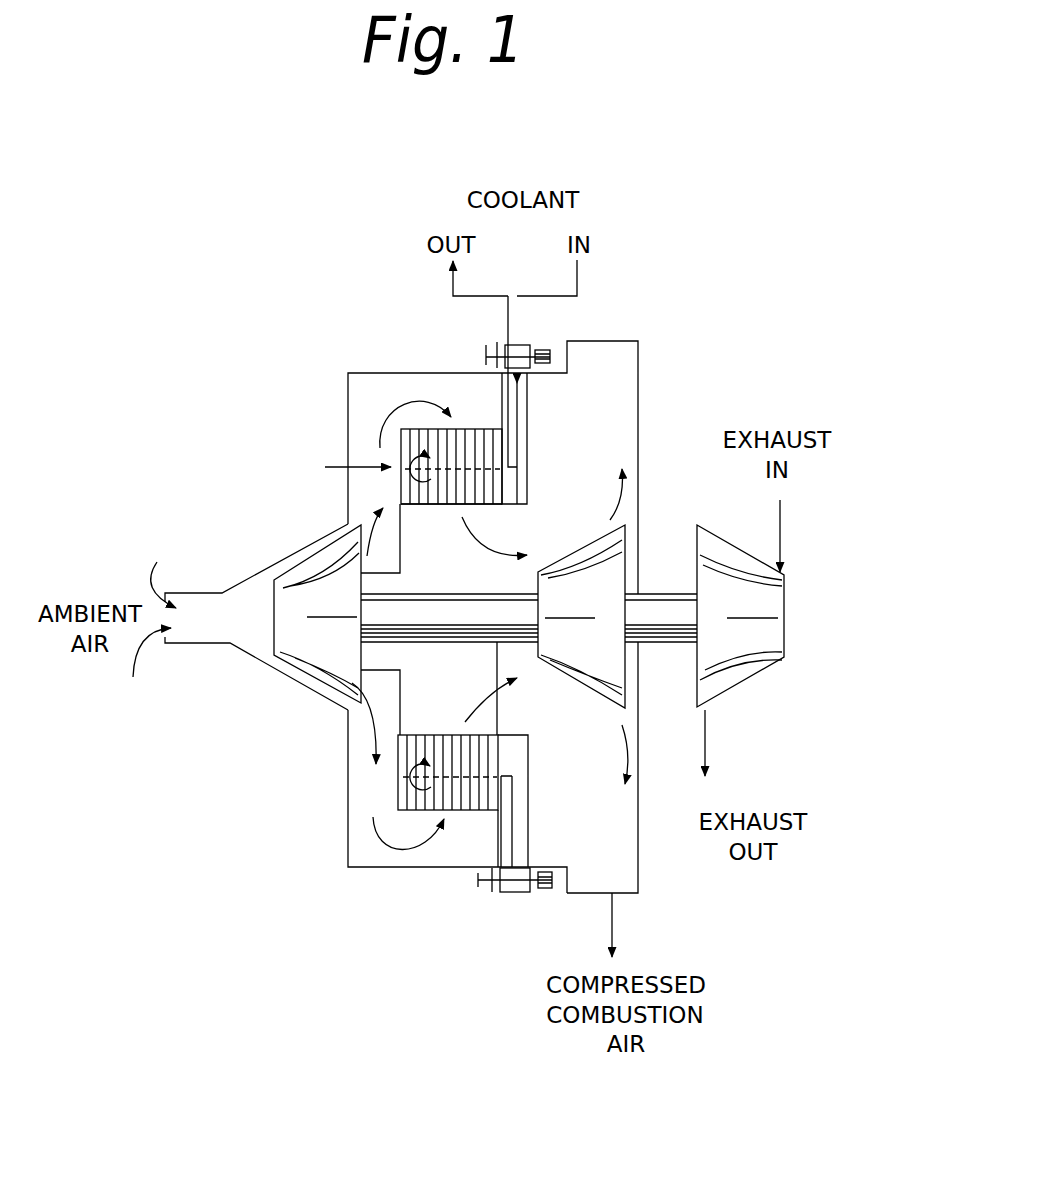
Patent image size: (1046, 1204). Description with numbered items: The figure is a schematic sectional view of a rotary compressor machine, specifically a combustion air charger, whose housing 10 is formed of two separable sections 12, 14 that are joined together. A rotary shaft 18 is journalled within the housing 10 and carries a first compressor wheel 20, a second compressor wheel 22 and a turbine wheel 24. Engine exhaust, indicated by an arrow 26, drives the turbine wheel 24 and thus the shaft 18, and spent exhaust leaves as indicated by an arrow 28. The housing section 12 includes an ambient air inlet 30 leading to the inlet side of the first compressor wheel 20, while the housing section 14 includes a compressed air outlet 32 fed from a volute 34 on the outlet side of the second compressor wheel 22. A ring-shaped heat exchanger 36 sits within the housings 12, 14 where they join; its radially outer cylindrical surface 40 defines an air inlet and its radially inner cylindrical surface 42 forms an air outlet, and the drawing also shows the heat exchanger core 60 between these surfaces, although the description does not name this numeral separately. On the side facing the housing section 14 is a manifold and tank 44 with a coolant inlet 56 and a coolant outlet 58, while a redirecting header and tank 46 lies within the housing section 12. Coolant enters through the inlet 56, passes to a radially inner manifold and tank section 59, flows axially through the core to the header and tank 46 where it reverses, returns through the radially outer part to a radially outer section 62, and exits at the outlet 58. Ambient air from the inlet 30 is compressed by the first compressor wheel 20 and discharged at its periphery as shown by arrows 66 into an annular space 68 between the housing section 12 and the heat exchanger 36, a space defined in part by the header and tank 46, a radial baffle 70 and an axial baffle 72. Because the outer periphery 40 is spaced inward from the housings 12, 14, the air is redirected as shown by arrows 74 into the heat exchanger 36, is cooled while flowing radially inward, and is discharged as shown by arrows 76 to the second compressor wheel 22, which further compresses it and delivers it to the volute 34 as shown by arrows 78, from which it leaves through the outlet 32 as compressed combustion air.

The housing 10 is at (400, 369).
The housing section 12 is at (408, 868).
The housing section 14 is at (638, 852).
The rotary shaft 18 is at (468, 627).
The first compressor wheel 20 is at (312, 645).
The second compressor wheel 22 is at (588, 653).
The turbine wheel 24 is at (773, 633).
The arrow 26 is at (780, 522).
The arrow 28 is at (705, 745).
The ambient air inlet 30 is at (197, 593).
The compressed air outlet 32 is at (612, 930).
The volute 34 is at (604, 853).
The heat exchanger 36 is at (473, 416).
The radially outer cylindrical surface 40 is at (420, 424).
The radially inner cylindrical surface 42 is at (497, 504).
The manifold and tank 44 is at (529, 448).
The redirecting header and tank 46 is at (325, 467).
The coolant inlet 56 is at (577, 298).
The coolant outlet 58 is at (478, 296).
The radially inner manifold and tank section 59 is at (520, 483).
The heat exchanger fins 60 is at (450, 504).
The radially outer section 62 is at (507, 447).
The arrows 66 is at (367, 530).
The annular space 68 is at (362, 457).
The radial baffle 70 is at (403, 693).
The axial baffle 72 is at (397, 670).
The arrows 74 is at (383, 420).
The arrows 76 is at (490, 560).
The arrows 78 is at (620, 492).